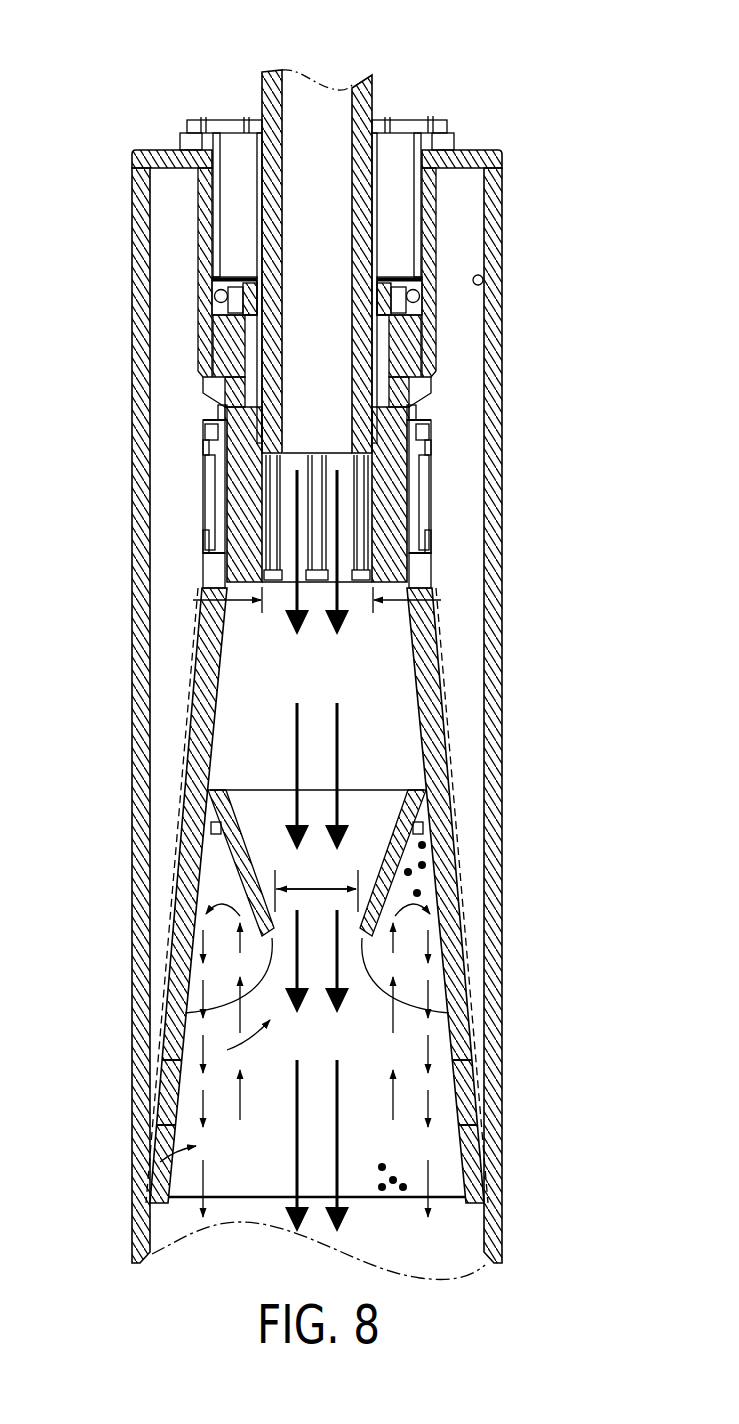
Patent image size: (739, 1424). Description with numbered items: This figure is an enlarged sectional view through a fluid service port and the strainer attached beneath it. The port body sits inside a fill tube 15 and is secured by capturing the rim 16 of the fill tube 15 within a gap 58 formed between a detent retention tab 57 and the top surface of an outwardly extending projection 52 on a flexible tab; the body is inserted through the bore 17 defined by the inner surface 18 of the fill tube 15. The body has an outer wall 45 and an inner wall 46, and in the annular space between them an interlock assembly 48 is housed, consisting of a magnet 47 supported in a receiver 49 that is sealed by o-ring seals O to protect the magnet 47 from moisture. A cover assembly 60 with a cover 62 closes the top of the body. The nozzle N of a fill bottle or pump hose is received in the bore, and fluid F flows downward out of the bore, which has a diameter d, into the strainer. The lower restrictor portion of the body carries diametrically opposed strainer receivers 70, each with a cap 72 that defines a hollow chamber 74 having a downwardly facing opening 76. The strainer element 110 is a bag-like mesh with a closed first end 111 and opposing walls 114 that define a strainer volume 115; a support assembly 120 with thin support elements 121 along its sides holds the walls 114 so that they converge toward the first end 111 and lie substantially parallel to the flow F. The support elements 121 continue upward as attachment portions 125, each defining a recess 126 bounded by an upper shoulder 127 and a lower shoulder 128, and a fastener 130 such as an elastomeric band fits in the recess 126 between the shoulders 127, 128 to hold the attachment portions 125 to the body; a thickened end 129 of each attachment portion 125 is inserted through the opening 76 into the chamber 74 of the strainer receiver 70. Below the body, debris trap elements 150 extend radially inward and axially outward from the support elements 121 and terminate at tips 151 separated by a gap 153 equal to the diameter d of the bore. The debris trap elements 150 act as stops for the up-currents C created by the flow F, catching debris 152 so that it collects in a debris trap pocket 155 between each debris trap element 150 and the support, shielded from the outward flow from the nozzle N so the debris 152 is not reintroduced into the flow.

The fill tube 15 is at (122, 326).
The rim 16 is at (183, 150).
The bore 17 is at (458, 397).
The inner surface 18 is at (484, 280).
The outer wall 45 is at (428, 238).
The inner wall 46 is at (421, 255).
The magnet 47 is at (228, 350).
The interlock assembly 48 is at (226, 331).
The receiver 49 is at (234, 274).
The projection 52 is at (196, 172).
The detent retention tab 57 is at (192, 135).
The gap 58 is at (196, 160).
The cover assembly 60 is at (431, 118).
The cover 62 is at (232, 131).
The strainer receiver 70 is at (205, 405).
The cap 72 is at (205, 428).
The hollow chamber 74 is at (205, 450).
The downwardly facing opening 76 is at (208, 505).
The strainer element 110 is at (175, 1177).
The first end 111 is at (218, 1200).
The walls 114 is at (197, 1125).
The strainer volume 115 is at (190, 1060).
The support assembly 120 is at (196, 658).
The support elements 121 is at (203, 707).
The attachment portions 125 is at (424, 424).
The recess 126 is at (206, 540).
The shoulder 127 is at (438, 456).
The shoulder 128 is at (436, 553).
The end 129 is at (200, 405).
The fastener 130 is at (205, 570).
The debris trap element 150 is at (222, 863).
The tip 151 is at (185, 1013).
The debris 152 is at (427, 862).
The gap 153 is at (338, 886).
The debris trap pocket 155 is at (214, 893).
The nozzle N is at (359, 90).
The o-ring seals O is at (213, 295).
The fluid F is at (296, 778).
The up-currents C is at (440, 930).
The diameter d is at (198, 603).